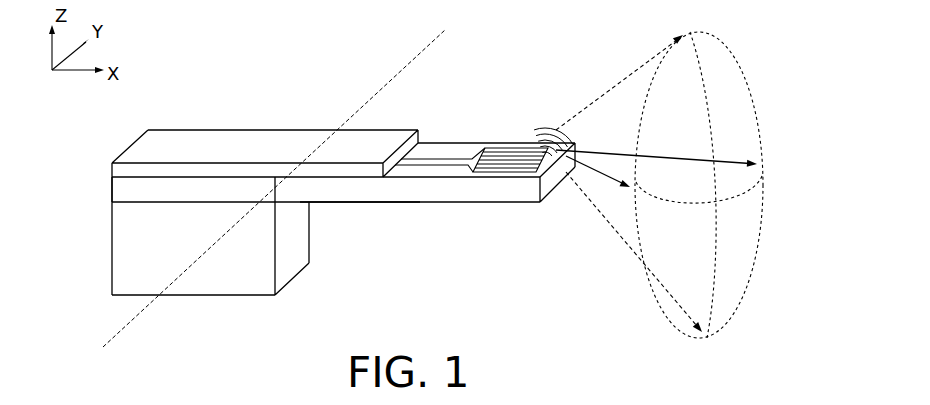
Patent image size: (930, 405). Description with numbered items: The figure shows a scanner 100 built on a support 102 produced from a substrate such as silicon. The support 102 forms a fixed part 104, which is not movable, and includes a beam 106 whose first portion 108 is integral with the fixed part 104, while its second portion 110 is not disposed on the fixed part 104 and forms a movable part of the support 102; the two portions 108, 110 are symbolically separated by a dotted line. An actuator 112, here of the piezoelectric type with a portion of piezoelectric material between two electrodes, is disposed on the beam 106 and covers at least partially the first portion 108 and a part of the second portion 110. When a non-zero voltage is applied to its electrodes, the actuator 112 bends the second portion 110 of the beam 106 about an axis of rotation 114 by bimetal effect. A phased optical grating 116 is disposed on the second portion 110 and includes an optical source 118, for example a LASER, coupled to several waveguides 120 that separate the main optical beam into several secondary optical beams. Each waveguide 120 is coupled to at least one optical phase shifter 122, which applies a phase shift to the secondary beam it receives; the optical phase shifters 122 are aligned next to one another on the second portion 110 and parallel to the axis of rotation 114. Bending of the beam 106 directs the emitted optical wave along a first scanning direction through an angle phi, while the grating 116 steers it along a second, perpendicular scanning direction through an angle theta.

The scanner 100 is at (182, 107).
The support 102 is at (102, 175).
The fixed part 104 is at (290, 257).
The beam 106 is at (345, 195).
The first portion 108 is at (137, 187).
The second portion 110 is at (512, 193).
The actuator 112 is at (222, 140).
The axis of rotation 114 is at (125, 322).
The phased optical grating 116 is at (507, 123).
The optical source 118 is at (415, 160).
The waveguides 120 is at (495, 172).
The optical phase shifter 122 is at (518, 175).